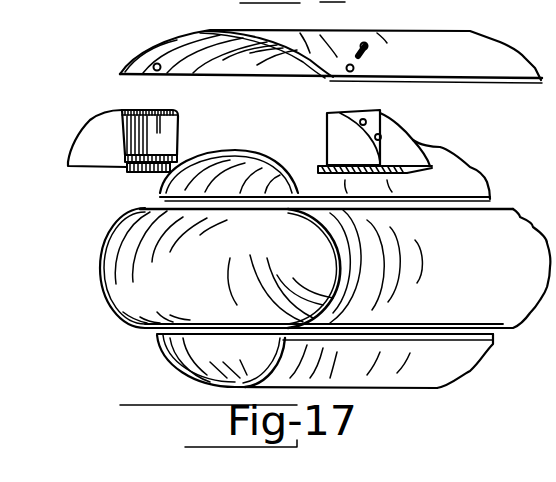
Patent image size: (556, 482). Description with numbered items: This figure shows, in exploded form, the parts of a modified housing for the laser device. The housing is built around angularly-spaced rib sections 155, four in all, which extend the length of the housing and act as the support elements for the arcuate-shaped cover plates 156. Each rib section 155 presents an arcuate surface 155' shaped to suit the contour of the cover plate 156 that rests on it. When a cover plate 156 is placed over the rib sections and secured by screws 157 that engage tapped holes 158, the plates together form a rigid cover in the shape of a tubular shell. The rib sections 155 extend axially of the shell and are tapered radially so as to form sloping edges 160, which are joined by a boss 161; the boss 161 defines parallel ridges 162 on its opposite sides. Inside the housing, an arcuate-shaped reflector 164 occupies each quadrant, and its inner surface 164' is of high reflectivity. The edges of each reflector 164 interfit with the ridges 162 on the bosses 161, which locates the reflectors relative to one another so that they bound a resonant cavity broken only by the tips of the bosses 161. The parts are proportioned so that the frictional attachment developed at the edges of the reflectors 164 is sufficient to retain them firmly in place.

The rib section 155 is at (88, 138).
The surface 155' is at (435, 156).
The cover plate 156 is at (447, 46).
The screw 157 is at (364, 44).
The tapped hole 158 is at (366, 122).
The sloping edge 160 is at (167, 137).
The boss 161 is at (124, 168).
The ridge 162 is at (148, 172).
The reflector 164 is at (300, 343).
The inner surface 164' is at (297, 268).